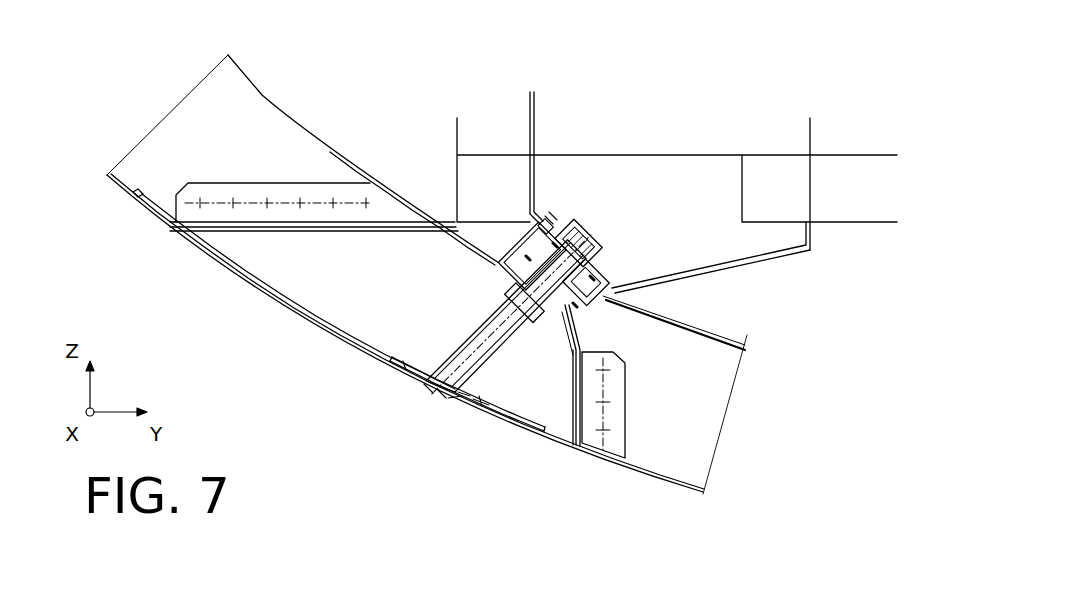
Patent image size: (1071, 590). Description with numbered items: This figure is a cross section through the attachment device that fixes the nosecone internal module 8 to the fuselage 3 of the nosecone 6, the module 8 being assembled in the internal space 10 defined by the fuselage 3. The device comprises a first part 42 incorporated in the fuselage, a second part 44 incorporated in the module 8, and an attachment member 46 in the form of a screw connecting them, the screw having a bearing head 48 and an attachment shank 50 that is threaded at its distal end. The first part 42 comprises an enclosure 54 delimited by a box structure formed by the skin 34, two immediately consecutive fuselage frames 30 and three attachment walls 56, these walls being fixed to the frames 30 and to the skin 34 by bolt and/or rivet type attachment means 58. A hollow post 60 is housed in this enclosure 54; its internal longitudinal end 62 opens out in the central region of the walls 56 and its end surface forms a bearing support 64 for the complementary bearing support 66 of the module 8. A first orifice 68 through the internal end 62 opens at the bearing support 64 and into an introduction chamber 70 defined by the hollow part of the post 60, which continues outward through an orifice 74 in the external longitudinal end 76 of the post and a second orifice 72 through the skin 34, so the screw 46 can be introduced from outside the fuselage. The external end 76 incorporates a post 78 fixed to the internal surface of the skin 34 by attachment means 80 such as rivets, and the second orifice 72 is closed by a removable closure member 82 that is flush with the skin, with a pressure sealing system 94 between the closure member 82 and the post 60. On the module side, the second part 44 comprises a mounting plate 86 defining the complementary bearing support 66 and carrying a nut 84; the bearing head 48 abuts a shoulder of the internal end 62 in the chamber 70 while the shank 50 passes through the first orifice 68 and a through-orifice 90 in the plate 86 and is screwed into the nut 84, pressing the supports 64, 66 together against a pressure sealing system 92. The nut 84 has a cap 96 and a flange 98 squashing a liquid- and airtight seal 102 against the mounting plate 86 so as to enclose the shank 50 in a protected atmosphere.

The fuselage 3 is at (250, 298).
The nosecone 6 is at (163, 94).
The nosecone internal module 8 is at (711, 91).
The internal space 10 is at (646, 117).
The fuselage frames 30 is at (240, 262).
The skin 34 is at (120, 194).
The first part 42 is at (395, 206).
The second part 44 is at (606, 308).
The attachment member 46 is at (540, 318).
The bearing head 48 is at (505, 408).
The attachment shank 50 is at (575, 318).
The enclosure 54 is at (316, 272).
The attachment walls 56 is at (318, 228).
The bolt and/or rivet type attachment means 58 is at (235, 200).
The hollow post 60 is at (455, 336).
The internal longitudinal end 62 is at (505, 250).
The bearing support 64 is at (700, 272).
The complementary bearing support 66 is at (620, 350).
The first orifice 68 is at (618, 258).
The introduction chamber 70 is at (484, 318).
The second orifice 72 is at (455, 396).
The orifice 74 is at (430, 398).
The external longitudinal end 76 is at (423, 356).
The post 78 is at (403, 403).
The attachment means 80 is at (400, 358).
The closure member 82 is at (441, 396).
The nut 84 is at (612, 244).
The mounting plate 86 is at (520, 262).
The through-orifice 90 is at (603, 252).
The pressure sealing system 92 is at (605, 330).
The pressure sealing system 94 is at (428, 358).
The cap 96 is at (586, 226).
The flange 98 is at (553, 215).
The liquid- and airtight seal 102 is at (568, 224).